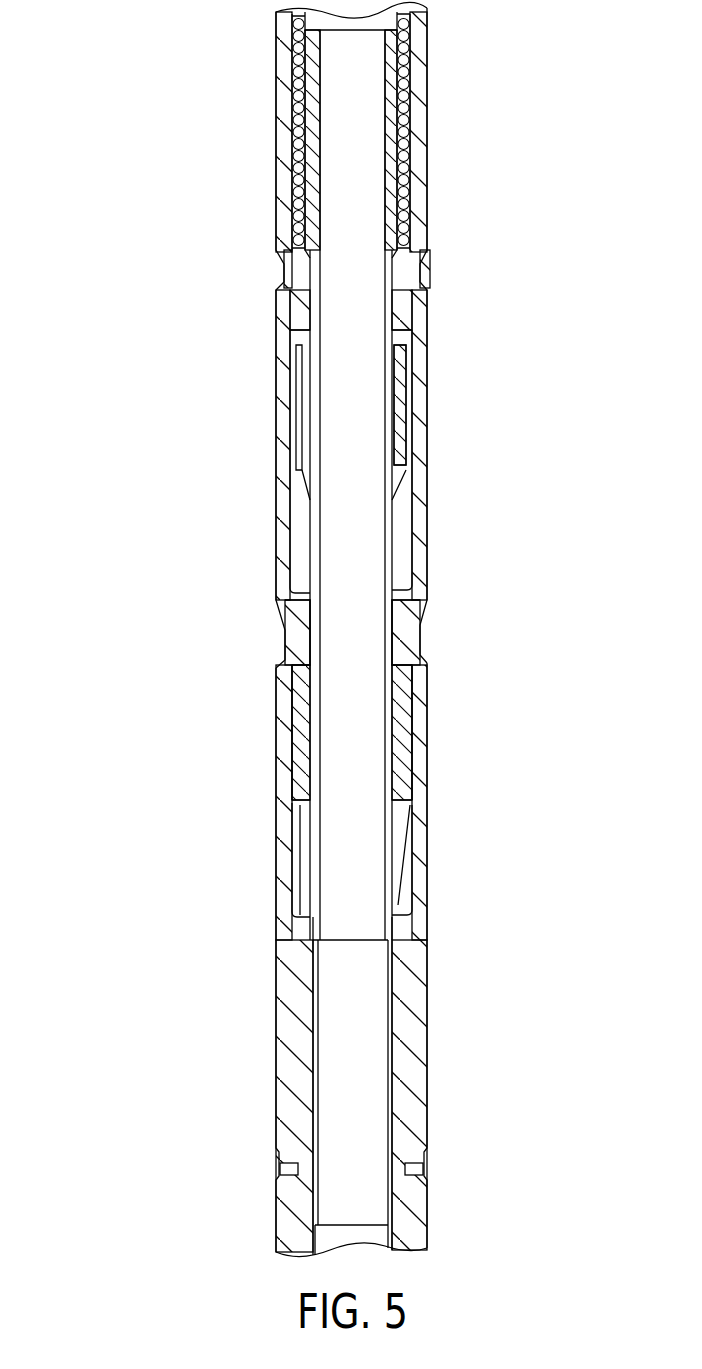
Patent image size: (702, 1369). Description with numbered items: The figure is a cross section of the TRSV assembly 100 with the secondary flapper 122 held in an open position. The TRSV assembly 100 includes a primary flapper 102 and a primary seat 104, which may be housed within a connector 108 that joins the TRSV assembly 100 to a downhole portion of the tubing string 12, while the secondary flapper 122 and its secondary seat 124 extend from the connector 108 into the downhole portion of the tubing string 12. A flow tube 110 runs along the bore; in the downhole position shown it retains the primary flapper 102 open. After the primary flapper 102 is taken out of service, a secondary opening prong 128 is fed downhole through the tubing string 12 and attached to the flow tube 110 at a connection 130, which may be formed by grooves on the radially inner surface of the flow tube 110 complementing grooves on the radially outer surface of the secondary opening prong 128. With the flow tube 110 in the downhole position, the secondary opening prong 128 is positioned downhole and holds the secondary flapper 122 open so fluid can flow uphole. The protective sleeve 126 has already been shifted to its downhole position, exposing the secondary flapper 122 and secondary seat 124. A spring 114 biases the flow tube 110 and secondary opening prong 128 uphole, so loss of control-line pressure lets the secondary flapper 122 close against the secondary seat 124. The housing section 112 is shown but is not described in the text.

The TRSV assembly 100 is at (183, 437).
The tubing string 12 is at (290, 960).
The primary flapper 102 is at (400, 522).
The primary seat 104 is at (400, 410).
The connector 108 is at (290, 610).
The flow tube 110 is at (405, 270).
The upper housing 112 is at (282, 158).
The spring 114 is at (408, 185).
The secondary flapper 122 is at (400, 853).
The secondary seat 124 is at (402, 717).
The protective sleeve 126 is at (380, 1085).
The secondary opening prong 128 is at (345, 373).
The connection 130 is at (410, 72).